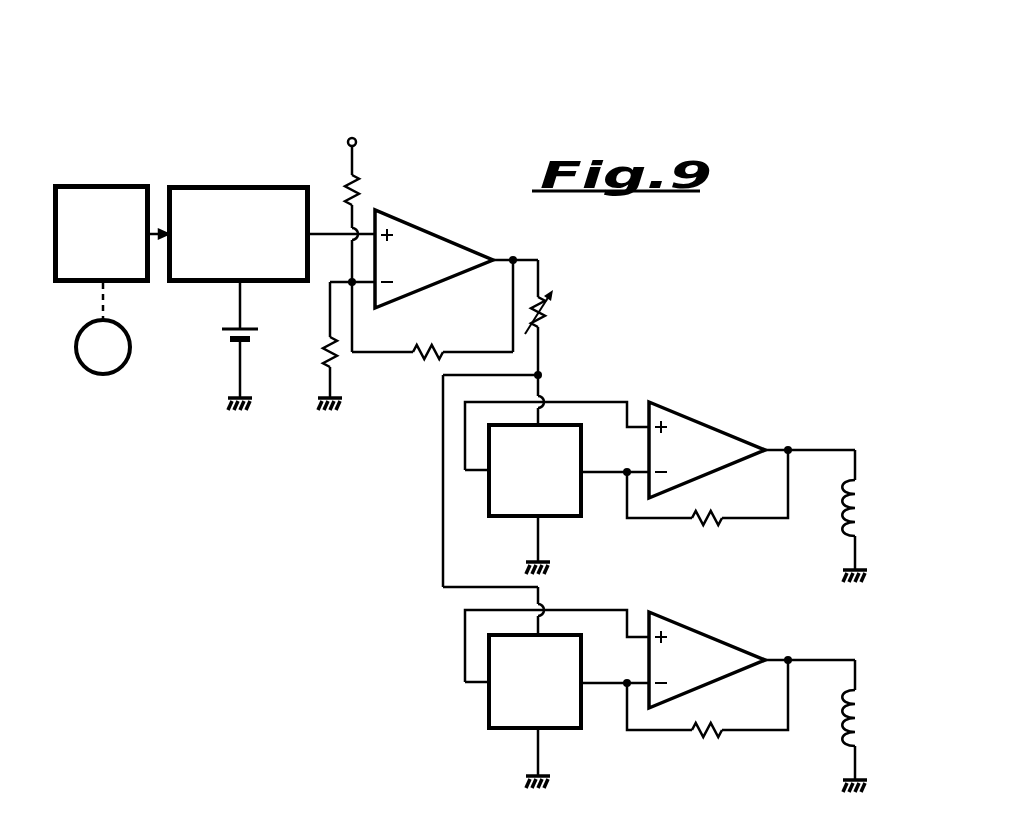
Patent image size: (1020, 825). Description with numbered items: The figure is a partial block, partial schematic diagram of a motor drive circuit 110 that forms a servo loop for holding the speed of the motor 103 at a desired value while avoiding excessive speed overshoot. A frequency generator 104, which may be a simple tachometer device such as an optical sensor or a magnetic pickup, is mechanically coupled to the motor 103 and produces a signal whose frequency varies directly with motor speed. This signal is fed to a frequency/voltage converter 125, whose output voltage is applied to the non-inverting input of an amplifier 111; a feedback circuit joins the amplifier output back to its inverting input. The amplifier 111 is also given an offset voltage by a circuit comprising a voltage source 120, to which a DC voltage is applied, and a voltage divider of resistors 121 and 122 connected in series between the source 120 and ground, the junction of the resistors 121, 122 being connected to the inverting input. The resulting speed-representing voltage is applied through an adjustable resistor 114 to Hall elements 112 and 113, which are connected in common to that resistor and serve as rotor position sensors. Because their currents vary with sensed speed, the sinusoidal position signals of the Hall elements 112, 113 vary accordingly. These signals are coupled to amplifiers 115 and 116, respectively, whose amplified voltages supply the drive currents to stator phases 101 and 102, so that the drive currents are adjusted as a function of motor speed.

The stator phase 101 is at (846, 516).
The stator phase 102 is at (844, 726).
The motor 103 is at (103, 374).
The frequency generator 104 is at (108, 185).
The drive circuit 110 is at (716, 334).
The amplifier 111 is at (469, 275).
The Hall element 112 is at (583, 520).
The Hall element 113 is at (583, 732).
The adjustable resistor 114 is at (548, 318).
The amplifier 115 is at (728, 436).
The amplifier 116 is at (728, 646).
The voltage source 120 is at (352, 138).
The resistor 121 is at (363, 192).
The resistor 122 is at (323, 353).
The frequency/voltage converter 125 is at (230, 185).